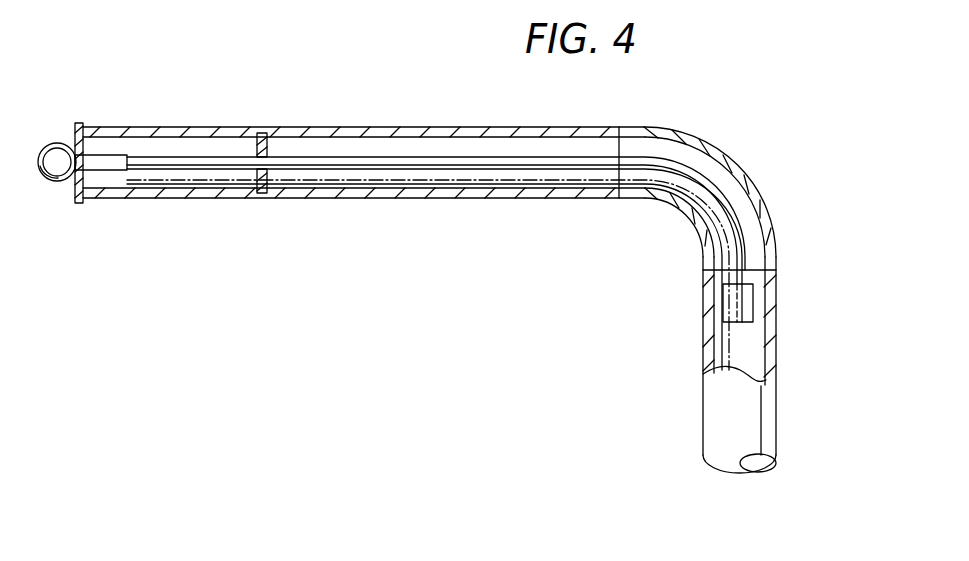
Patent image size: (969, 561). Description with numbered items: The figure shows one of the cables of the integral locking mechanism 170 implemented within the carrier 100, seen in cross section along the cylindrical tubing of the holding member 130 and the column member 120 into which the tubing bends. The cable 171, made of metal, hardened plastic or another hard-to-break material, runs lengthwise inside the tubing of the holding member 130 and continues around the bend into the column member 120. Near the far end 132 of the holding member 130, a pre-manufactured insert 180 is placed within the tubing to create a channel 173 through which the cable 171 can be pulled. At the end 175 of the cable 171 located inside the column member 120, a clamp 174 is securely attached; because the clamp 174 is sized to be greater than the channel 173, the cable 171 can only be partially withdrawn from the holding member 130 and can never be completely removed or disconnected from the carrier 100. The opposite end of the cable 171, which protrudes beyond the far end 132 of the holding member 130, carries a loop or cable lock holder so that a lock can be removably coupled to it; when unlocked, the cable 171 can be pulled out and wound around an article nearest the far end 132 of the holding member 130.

The carrier 100 is at (540, 270).
The column member 120 is at (747, 340).
The holding member 130 is at (338, 147).
The far end of holding member 132 is at (167, 200).
The locking mechanism 170 is at (703, 163).
The cable 171 is at (185, 157).
The channel 173 is at (294, 191).
The clamp 174 is at (727, 311).
The end of cable 175 is at (737, 262).
The insert 180 is at (266, 143).